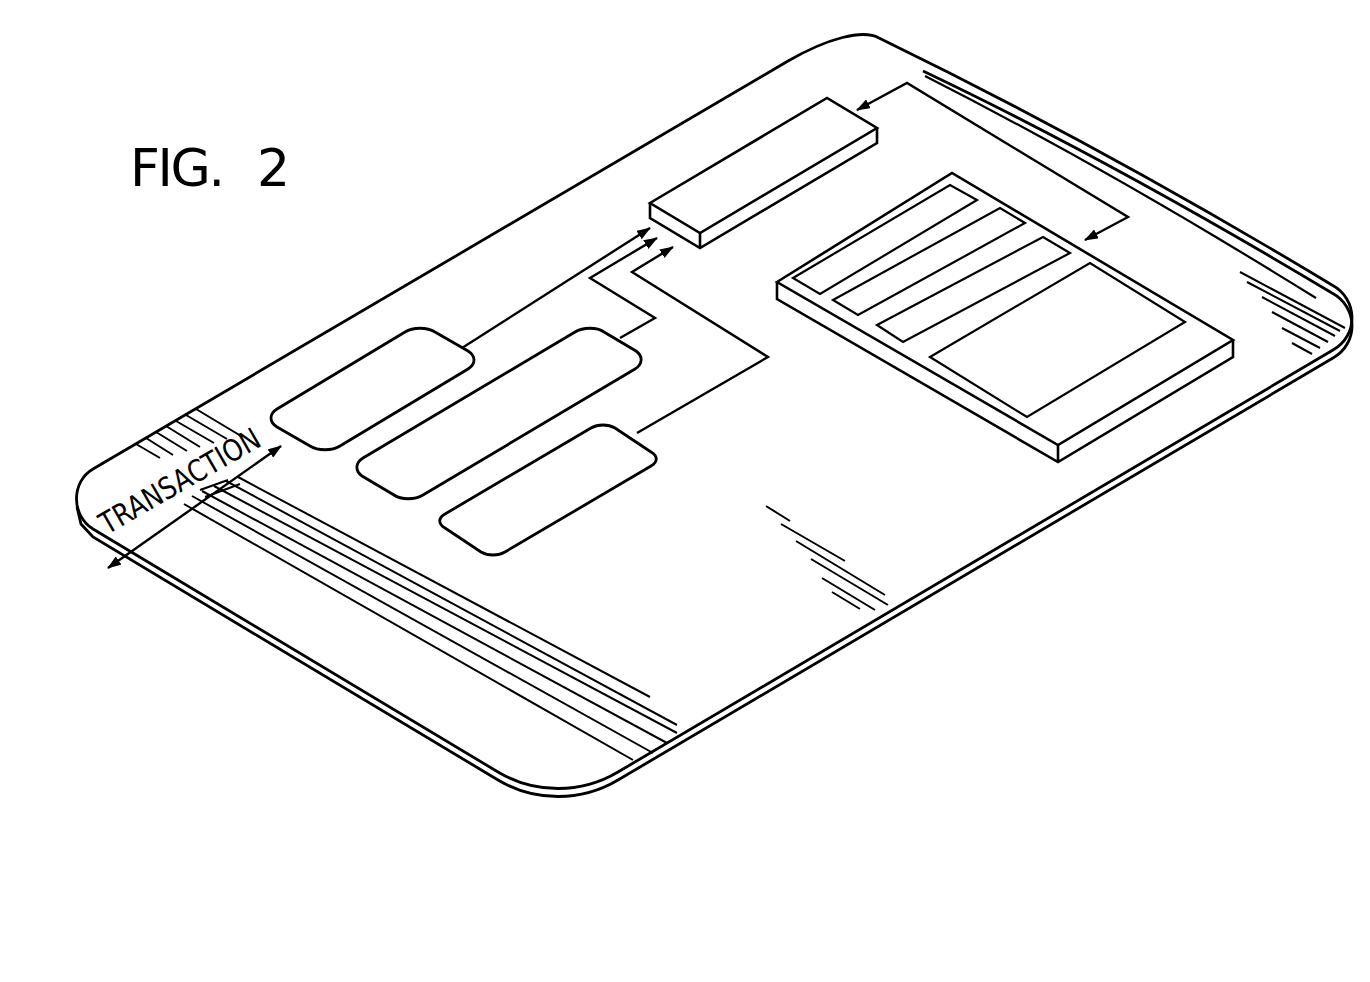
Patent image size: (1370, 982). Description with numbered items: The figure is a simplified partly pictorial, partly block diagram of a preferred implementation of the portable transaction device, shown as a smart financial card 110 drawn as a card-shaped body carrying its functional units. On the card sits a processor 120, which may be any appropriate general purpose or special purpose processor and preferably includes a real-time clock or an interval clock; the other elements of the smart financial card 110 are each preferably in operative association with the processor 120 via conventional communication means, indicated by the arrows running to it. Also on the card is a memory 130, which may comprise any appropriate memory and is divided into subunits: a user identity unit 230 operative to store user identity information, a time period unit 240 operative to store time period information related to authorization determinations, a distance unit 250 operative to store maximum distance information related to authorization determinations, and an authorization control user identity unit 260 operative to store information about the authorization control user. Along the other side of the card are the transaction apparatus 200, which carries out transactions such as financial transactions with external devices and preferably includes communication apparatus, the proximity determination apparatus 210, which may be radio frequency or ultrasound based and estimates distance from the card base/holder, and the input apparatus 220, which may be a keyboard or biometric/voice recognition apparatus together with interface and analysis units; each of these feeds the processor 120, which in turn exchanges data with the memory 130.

The smart financial card 110 is at (1063, 133).
The processor 120 is at (822, 100).
The memory 130 is at (1217, 322).
The transaction apparatus 200 is at (432, 323).
The proximity determination apparatus 210 is at (382, 485).
The input apparatus 220 is at (457, 533).
The user identity unit 230 is at (800, 300).
The time period unit 240 is at (850, 320).
The distance unit 250 is at (897, 333).
The authorization control user identity unit 260 is at (1022, 410).